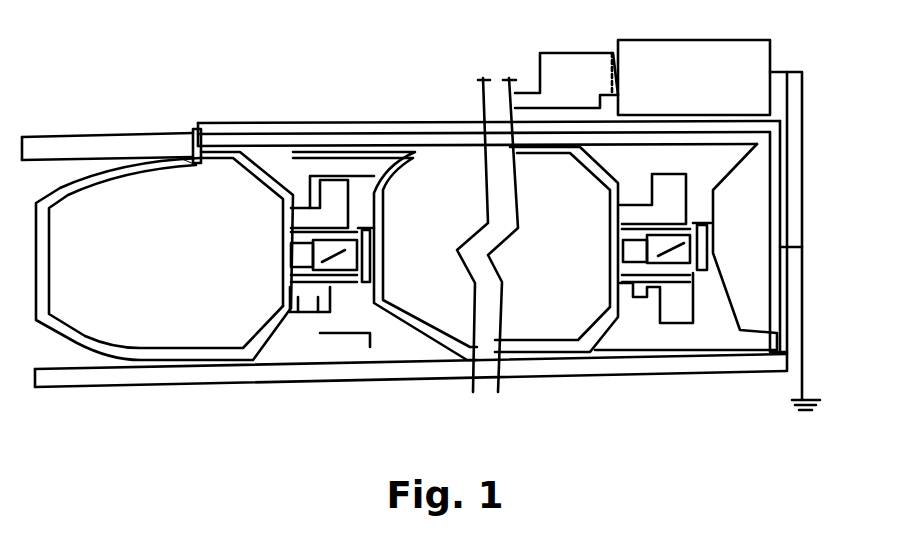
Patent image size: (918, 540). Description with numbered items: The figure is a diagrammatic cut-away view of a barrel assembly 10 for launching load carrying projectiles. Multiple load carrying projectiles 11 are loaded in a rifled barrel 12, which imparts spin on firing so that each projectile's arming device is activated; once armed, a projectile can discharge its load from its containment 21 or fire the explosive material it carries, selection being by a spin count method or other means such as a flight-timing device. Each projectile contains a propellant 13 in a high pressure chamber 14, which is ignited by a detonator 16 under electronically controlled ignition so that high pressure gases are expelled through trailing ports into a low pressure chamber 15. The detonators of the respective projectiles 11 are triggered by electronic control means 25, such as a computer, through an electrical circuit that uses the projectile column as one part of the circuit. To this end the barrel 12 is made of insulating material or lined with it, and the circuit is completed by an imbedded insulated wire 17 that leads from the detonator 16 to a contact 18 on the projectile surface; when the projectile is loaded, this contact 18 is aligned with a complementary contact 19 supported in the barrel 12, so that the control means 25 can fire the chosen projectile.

The barrel assembly 10 is at (186, 74).
The load carrying projectile 11 is at (186, 271).
The rifled barrel 12 is at (262, 139).
The propellant 13 is at (363, 243).
The high pressure chamber 14 is at (330, 315).
The low pressure chamber 15 is at (370, 315).
The detonator 16 is at (290, 258).
The imbedded insulated wire 17 is at (247, 180).
The contact 18 is at (197, 167).
The complementary contact 19 is at (192, 131).
The containment 21 is at (537, 175).
The electronic control means 25 is at (725, 94).